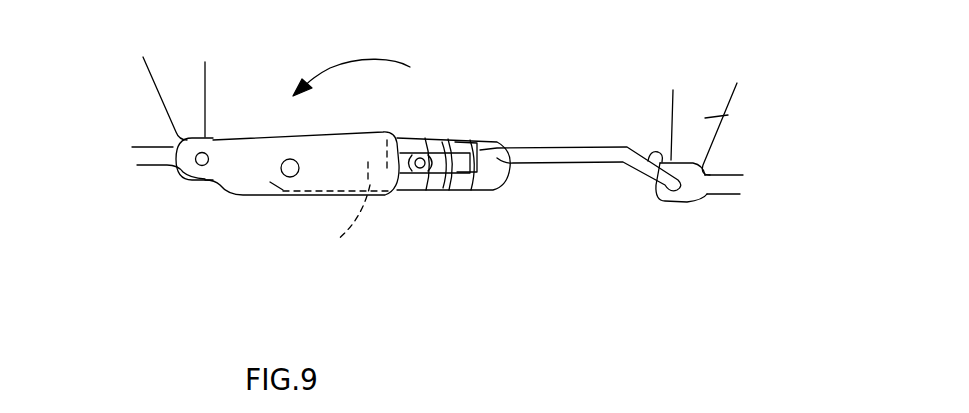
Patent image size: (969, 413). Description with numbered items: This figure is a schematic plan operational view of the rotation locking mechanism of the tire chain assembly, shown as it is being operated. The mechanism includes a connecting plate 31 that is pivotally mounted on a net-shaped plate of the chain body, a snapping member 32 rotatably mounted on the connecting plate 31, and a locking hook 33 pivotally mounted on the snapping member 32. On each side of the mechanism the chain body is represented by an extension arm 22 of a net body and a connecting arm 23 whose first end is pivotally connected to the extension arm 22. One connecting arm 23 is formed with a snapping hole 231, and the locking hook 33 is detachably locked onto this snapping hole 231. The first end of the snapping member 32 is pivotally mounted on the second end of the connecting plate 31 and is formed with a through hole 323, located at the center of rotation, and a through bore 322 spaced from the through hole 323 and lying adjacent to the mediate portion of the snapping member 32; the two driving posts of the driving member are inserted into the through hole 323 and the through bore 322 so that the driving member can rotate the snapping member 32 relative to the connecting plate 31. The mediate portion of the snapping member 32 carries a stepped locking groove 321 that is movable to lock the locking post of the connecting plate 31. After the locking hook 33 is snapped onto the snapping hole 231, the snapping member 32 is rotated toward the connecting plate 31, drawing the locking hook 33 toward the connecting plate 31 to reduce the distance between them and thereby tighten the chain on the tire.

The extension arm 22 is at (167, 88).
The connecting arm 23 is at (150, 158).
The snapping hole 231 is at (668, 203).
The connecting plate 31 is at (250, 150).
The snapping member 32 is at (493, 180).
The stepped locking groove 321 is at (457, 162).
The through bore 322 is at (423, 168).
The through hole 323 is at (326, 248).
The locking hook 33 is at (568, 155).